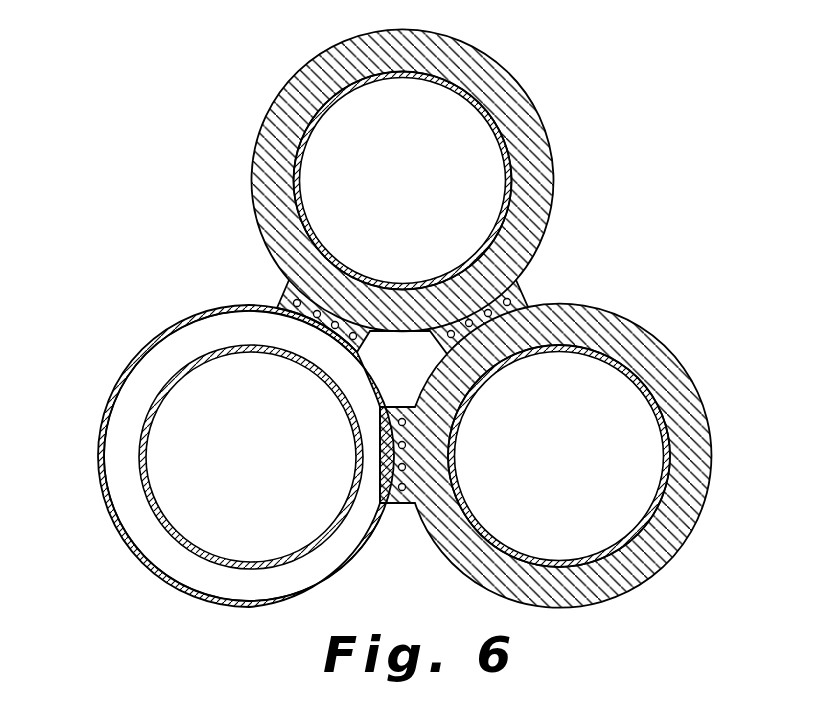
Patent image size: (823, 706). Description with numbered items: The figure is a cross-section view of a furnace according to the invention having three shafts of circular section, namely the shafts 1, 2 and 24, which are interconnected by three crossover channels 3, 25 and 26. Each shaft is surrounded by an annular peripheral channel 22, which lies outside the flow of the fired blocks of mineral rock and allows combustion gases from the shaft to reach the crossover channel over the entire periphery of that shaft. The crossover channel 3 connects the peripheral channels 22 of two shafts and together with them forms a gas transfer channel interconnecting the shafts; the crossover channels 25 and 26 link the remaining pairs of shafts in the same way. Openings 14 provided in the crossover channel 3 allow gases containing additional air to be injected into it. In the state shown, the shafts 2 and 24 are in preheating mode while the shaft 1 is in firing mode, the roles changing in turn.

The shaft 1 is at (152, 570).
The shaft 2 is at (687, 537).
The shaft 24 is at (530, 102).
The annular peripheral channel 22 is at (137, 407).
The crossover channel 25 is at (288, 297).
The crossover channel 26 is at (520, 292).
The crossover channel 3 is at (397, 505).
The opening 14 is at (400, 505).